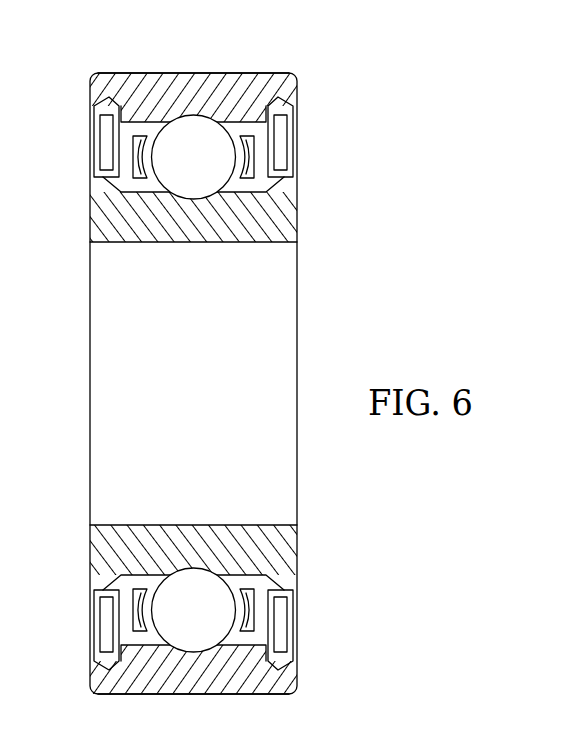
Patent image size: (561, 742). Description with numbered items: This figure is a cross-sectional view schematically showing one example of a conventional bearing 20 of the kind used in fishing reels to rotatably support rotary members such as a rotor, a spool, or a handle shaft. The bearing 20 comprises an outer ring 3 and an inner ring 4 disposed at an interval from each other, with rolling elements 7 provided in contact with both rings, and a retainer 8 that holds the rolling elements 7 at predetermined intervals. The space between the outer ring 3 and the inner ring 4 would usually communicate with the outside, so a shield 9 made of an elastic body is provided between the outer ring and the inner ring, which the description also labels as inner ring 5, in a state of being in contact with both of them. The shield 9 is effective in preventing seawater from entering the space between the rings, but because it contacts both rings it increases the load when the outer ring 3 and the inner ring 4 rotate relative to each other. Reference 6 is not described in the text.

The bearing 20 is at (412, 102).
The outer ring 3 is at (97, 80).
The inner ring 4 is at (98, 212).
The inner ring 5 is at (272, 132).
The outer peripheral surface of outer ring 6 is at (197, 73).
The rolling elements 7 is at (165, 145).
The retainer 8 is at (254, 160).
The shield 9 is at (102, 164).